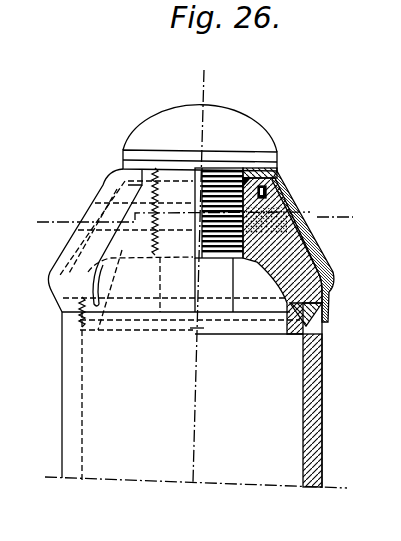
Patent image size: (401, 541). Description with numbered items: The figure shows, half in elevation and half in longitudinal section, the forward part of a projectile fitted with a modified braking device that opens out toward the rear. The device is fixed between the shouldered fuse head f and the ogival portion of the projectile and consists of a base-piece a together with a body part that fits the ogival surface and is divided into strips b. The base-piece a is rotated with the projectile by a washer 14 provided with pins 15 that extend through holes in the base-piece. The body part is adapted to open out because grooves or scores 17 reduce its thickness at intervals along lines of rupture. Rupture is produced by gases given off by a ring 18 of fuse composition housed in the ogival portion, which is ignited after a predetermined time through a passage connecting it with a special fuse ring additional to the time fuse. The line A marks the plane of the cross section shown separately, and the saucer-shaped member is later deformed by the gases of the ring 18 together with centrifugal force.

The fuse head f is at (158, 123).
The washer 14 is at (276, 169).
The base-piece a is at (266, 190).
The pins 15 is at (290, 192).
The grooves or scores 17 is at (100, 245).
The ring of fuse composition 18 is at (252, 259).
The strips b is at (112, 263).
The section line A— A is at (62, 217).